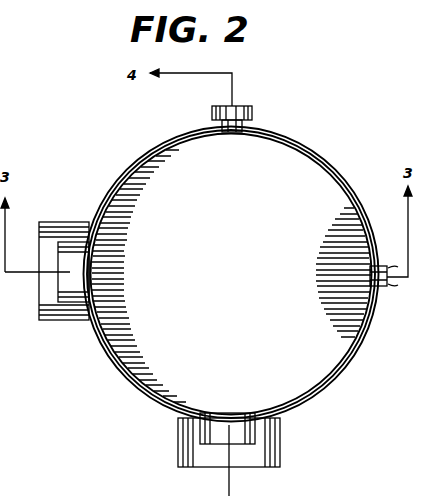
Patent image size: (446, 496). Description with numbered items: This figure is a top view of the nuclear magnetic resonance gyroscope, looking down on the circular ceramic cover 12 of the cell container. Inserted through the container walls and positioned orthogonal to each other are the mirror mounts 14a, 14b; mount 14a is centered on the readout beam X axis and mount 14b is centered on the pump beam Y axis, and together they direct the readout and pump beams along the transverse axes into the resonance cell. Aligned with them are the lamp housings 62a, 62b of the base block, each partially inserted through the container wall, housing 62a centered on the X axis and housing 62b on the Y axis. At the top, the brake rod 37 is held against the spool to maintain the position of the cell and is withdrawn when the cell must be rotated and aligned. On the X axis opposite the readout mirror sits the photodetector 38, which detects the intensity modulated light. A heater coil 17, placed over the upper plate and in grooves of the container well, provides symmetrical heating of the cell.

The cover 12 is at (296, 160).
The brake rod 37 is at (254, 106).
The photodetector 38 is at (378, 287).
The lamp housing 62a is at (56, 222).
The mirror mount 14a is at (82, 285).
The lamp housing 62b is at (183, 455).
The mirror mount 14b is at (255, 428).
The heater coil 17 is at (48, 493).